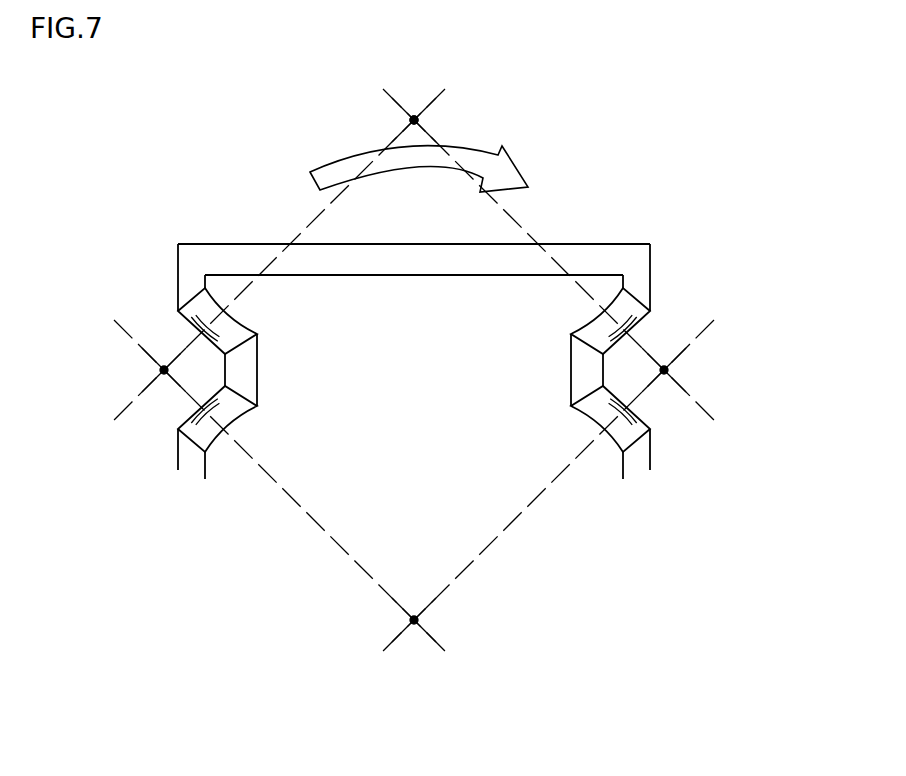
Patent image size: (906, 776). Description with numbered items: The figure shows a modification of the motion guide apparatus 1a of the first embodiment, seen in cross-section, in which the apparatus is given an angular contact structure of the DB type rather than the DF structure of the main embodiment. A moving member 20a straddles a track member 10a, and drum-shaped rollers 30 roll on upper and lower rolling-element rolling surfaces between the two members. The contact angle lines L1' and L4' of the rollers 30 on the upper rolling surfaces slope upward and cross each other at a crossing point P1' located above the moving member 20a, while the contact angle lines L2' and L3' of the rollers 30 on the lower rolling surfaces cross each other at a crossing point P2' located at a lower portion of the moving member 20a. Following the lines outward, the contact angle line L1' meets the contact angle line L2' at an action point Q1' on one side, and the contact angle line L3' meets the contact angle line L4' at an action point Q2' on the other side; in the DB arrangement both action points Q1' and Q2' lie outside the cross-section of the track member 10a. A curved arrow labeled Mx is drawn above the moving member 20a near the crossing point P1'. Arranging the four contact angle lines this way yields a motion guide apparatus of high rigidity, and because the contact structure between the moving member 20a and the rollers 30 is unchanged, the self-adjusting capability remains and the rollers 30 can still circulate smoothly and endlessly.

The motion guide apparatus 1a is at (481, 328).
The track member 10a is at (535, 606).
The moving member 20a is at (668, 157).
The drum-shaped roller 30 is at (625, 308).
The contact angle line L1' is at (566, 254).
The contact angle line L2' is at (548, 485).
The contact angle line L3' is at (279, 485).
The contact angle line L4' is at (279, 254).
The crossing point P1' is at (357, 111).
The crossing point P2' is at (411, 668).
The action point Q1' is at (724, 353).
The action point Q2' is at (106, 356).
The moment about X axis Mx is at (441, 122).